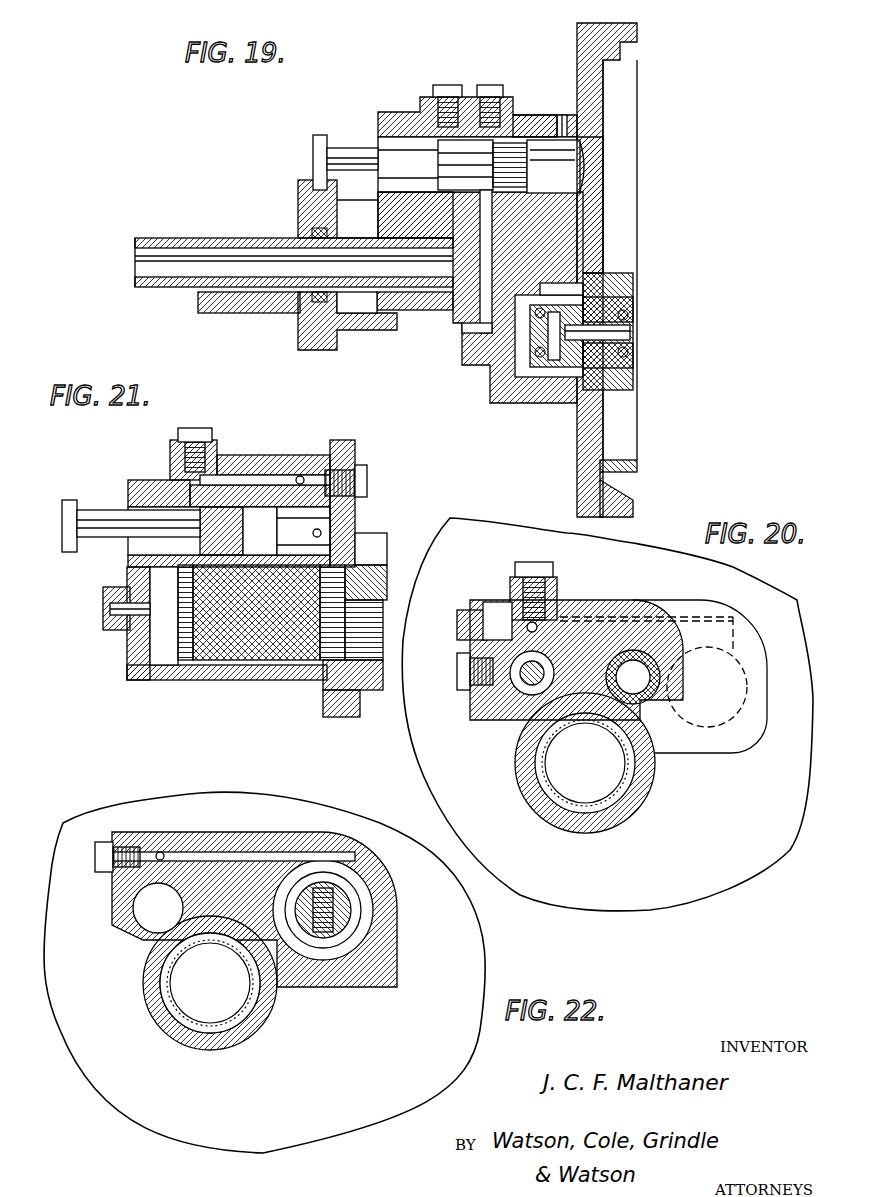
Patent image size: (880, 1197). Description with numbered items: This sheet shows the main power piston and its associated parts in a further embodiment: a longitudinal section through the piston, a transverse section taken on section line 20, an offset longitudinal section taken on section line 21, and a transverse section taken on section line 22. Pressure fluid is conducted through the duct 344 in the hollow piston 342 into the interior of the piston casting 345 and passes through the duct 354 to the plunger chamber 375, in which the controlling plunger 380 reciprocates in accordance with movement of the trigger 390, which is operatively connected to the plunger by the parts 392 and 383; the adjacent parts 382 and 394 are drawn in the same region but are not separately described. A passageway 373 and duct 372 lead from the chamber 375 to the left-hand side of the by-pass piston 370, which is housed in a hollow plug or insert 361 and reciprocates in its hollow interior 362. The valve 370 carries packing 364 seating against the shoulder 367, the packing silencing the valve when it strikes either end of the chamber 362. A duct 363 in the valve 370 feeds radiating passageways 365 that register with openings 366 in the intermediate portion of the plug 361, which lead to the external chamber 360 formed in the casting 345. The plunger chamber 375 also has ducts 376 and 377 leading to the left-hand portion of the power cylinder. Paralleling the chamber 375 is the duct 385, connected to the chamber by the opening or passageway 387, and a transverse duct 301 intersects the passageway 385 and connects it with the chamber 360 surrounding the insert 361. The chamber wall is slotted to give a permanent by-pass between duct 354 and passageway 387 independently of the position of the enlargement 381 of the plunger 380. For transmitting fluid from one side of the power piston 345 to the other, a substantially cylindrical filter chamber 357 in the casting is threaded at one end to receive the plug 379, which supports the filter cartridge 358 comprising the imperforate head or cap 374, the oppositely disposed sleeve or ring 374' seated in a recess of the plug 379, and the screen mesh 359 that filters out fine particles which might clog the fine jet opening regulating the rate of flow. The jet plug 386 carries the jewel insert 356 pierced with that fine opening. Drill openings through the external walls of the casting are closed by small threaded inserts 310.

In FIG. 19, the section line 20— 20 is at (447, 107).
In FIG. 20, the section line 21— 21 is at (550, 707).
In FIG. 19, the section line 22— 22 is at (553, 150).
In FIG. 21, the transverse duct 301 is at (300, 480).
In FIG. 20, the transverse duct 301 is at (663, 620).
In FIG. 22, the transverse duct 301 is at (267, 855).
In FIG. 19, the threaded inserts 310 is at (437, 85).
In FIG. 21, the threaded inserts 310 is at (183, 428).
In FIG. 20, the threaded inserts 310 is at (547, 567).
In FIG. 22, the threaded inserts 310 is at (102, 860).
In FIG. 19, the hollow piston 342 is at (220, 240).
In FIG. 20, the hollow piston 342 is at (660, 673).
In FIG. 19, the duct 344 is at (160, 252).
In FIG. 20, the duct 344 is at (640, 683).
In FIG. 19, the piston casting 345 is at (547, 106).
In FIG. 21, the piston casting 345 is at (337, 440).
In FIG. 19, the duct 354 is at (400, 215).
In FIG. 20, the duct 354 is at (595, 700).
In FIG. 21, the jewel insert 356 is at (105, 603).
In FIG. 21, the filter chamber 357 is at (150, 652).
In FIG. 20, the filter chamber 357 is at (533, 803).
In FIG. 22, the filter chamber 357 is at (197, 1053).
In FIG. 21, the filter cartridge 358 is at (190, 633).
In FIG. 20, the filter cartridge 358 is at (627, 780).
In FIG. 22, the filter cartridge 358 is at (180, 1020).
In FIG. 21, the screen mesh 359 is at (230, 648).
In FIG. 20, the screen mesh 359 is at (603, 793).
In FIG. 19, the external chamber 360 is at (553, 292).
In FIG. 20, the external chamber 360 is at (727, 723).
In FIG. 22, the external chamber 360 is at (373, 920).
In FIG. 19, the hollow plug or insert 361 is at (580, 370).
In FIG. 22, the hollow plug or insert 361 is at (347, 937).
In FIG. 19, the hollow interior 362 is at (510, 385).
In FIG. 19, the duct 363 is at (630, 327).
In FIG. 19, the packing 364 is at (630, 353).
In FIG. 19, the radiating passageways 365 is at (547, 400).
In FIG. 19, the openings 366 is at (613, 272).
In FIG. 19, the shoulder 367 is at (633, 310).
In FIG. 19, the by-pass piston 370 is at (620, 290).
In FIG. 22, the by-pass piston 370 is at (308, 930).
In FIG. 19, the duct 372 is at (480, 372).
In FIG. 19, the passageway 373 is at (472, 307).
In FIG. 21, the imperforate head or cap 374 is at (123, 617).
In FIG. 21, the sleeve or ring 374' is at (299, 643).
In FIG. 19, the plunger chamber 375 is at (450, 143).
In FIG. 21, the plunger chamber 375 is at (358, 477).
In FIG. 20, the plunger chamber 375 is at (500, 700).
In FIG. 22, the plunger chamber 375 is at (150, 922).
In FIG. 19, the duct 376 is at (572, 122).
In FIG. 19, the duct 377 is at (525, 116).
In FIG. 21, the plug 379 is at (387, 547).
In FIG. 19, the controlling plunger 380 is at (390, 128).
In FIG. 21, the controlling plunger 380 is at (90, 535).
In FIG. 20, the controlling plunger 380 is at (513, 705).
In FIG. 19, the enlargement 381 is at (390, 140).
In FIG. 21, the enlargement 381 is at (130, 510).
In FIG. 19, the valve plunger 382 is at (527, 155).
In FIG. 21, the valve plunger 382 is at (253, 513).
In FIG. 19, the connecting part 383 is at (317, 143).
In FIG. 21, the connecting part 383 is at (70, 500).
In FIG. 21, the duct 385 is at (220, 480).
In FIG. 20, the duct 385 is at (523, 620).
In FIG. 22, the duct 385 is at (162, 852).
In FIG. 21, the jet plug 386 is at (105, 627).
In FIG. 21, the opening or passageway 387 is at (190, 477).
In FIG. 20, the opening or passageway 387 is at (545, 610).
In FIG. 19, the trigger 390 is at (212, 305).
In FIG. 19, the connecting part 392 is at (300, 200).
In FIG. 19, the housing 394 is at (305, 327).